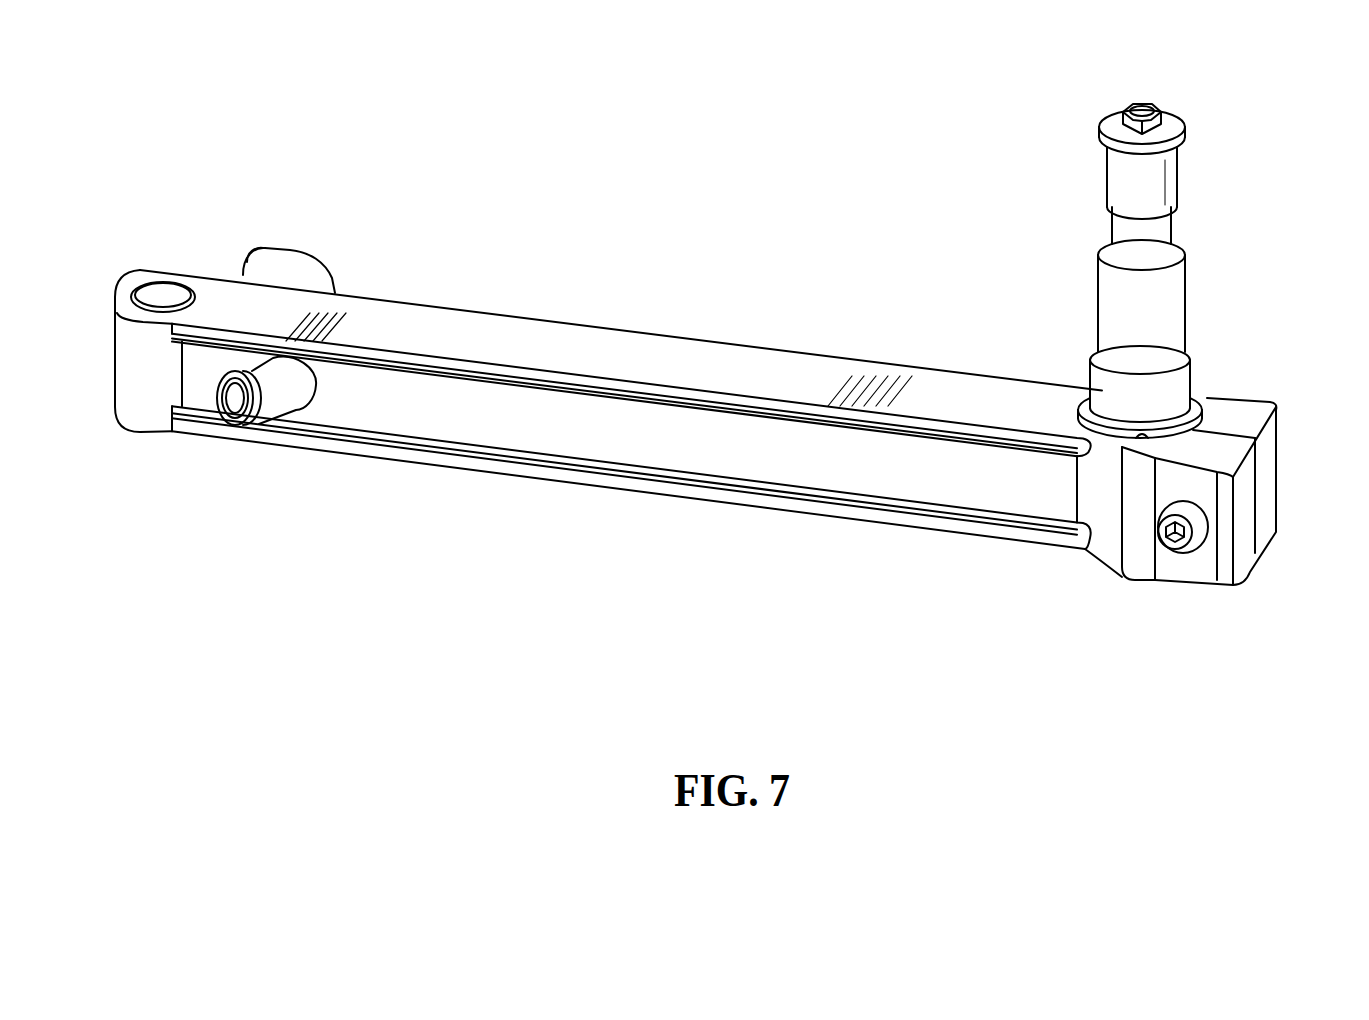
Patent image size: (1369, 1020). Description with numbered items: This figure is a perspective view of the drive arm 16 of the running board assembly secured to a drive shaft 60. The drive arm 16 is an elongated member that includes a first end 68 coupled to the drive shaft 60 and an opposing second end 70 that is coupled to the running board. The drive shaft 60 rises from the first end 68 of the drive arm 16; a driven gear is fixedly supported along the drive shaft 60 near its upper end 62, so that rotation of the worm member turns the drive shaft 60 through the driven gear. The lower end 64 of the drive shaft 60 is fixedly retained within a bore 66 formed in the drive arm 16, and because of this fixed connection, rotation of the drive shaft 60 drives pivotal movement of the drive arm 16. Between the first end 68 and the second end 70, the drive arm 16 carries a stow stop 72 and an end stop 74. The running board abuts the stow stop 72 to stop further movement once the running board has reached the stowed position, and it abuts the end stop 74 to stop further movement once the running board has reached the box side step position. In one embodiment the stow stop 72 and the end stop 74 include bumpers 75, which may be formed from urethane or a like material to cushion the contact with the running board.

The drive arm 16 is at (638, 328).
The drive shaft 60 is at (1160, 310).
The upper end 62 is at (1178, 162).
The lower end 64 is at (1183, 398).
The bore 66 is at (1122, 553).
The first end 68 is at (1263, 473).
The second end 70 is at (160, 270).
The stow stop 72 is at (282, 395).
The end stop 74 is at (308, 262).
The bumpers 75 is at (233, 403).